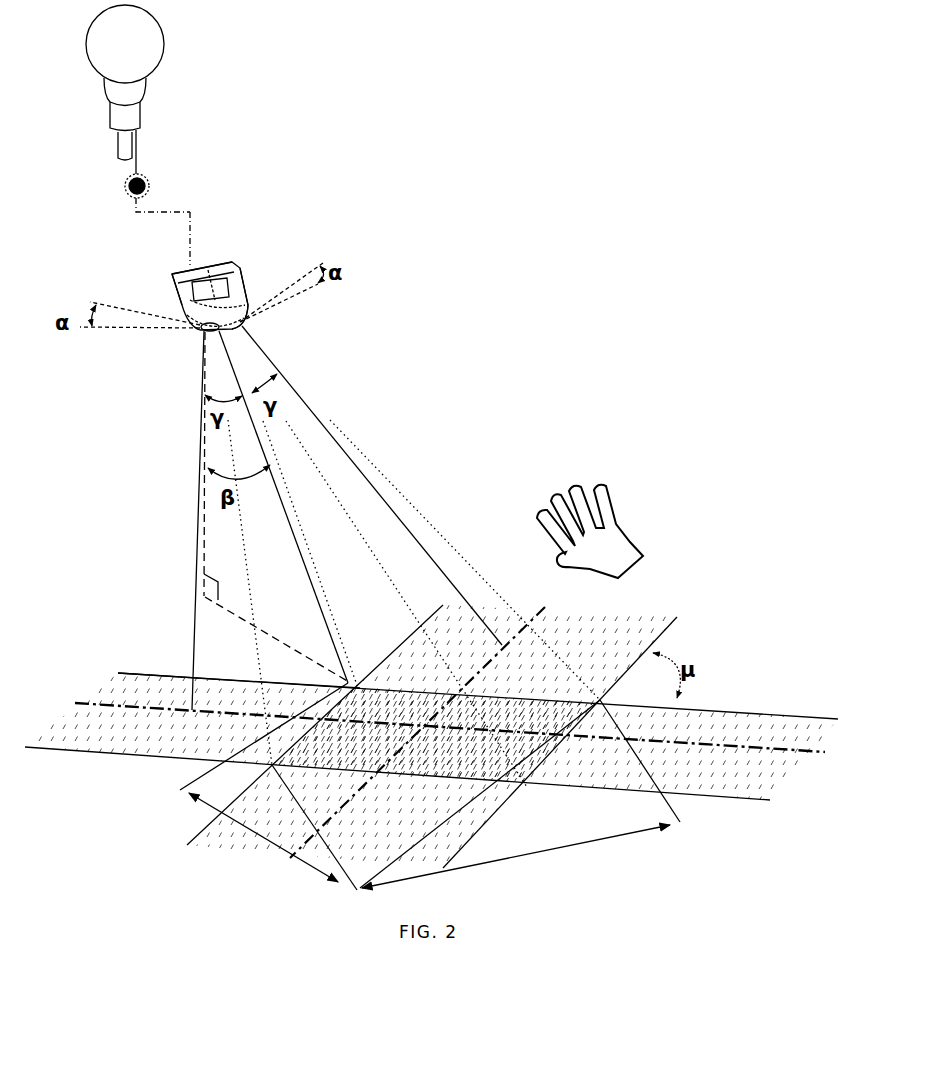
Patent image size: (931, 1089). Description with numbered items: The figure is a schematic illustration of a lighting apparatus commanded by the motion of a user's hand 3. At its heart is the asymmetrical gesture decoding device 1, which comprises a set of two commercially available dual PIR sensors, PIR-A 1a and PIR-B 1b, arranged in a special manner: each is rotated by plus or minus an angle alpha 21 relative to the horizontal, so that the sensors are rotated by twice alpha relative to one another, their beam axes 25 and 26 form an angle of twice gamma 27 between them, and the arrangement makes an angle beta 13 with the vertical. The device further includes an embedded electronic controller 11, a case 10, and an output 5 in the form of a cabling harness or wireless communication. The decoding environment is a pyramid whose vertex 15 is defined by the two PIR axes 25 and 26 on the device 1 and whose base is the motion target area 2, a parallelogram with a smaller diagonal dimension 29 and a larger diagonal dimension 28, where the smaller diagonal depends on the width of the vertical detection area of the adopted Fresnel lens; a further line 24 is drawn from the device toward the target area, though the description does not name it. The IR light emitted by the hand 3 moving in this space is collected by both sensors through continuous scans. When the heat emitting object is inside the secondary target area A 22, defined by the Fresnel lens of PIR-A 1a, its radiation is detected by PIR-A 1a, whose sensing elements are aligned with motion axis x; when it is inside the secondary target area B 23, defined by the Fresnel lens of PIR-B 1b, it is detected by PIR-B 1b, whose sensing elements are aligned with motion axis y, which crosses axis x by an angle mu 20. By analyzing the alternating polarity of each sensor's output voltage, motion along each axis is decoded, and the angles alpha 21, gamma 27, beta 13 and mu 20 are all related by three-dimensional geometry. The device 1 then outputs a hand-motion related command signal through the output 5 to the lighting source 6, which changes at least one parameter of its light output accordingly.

The asymmetrical gesture decoding device 1 is at (247, 288).
The PIR-A dual PIR sensor set 1a is at (200, 328).
The PIR-B dual PIR sensor set 1b is at (246, 318).
The motion target area (MTA) 2 is at (456, 764).
The user's hand 3 is at (625, 532).
The output (cabling harness or wireless communication) 5 is at (117, 182).
The lighting source 6 is at (150, 46).
The case 10 is at (180, 272).
The embedded electronic controller 11 is at (182, 292).
The angle β 13 is at (230, 508).
The vertex 15 is at (200, 268).
The angle μ 20 is at (712, 662).
The angle α 21 is at (93, 302).
The secondary target area A (STA-A) 22 is at (640, 628).
The secondary target area B (STA-B) 23 is at (148, 676).
The light beam 24 is at (318, 601).
The PIR axis of PIR-A 25 is at (266, 352).
The PIR axis of PIR-B 26 is at (196, 455).
The angle 2γ 27 is at (208, 412).
The larger diagonal dimension L 28 is at (550, 856).
The smaller diagonal dimension l 29 is at (302, 876).